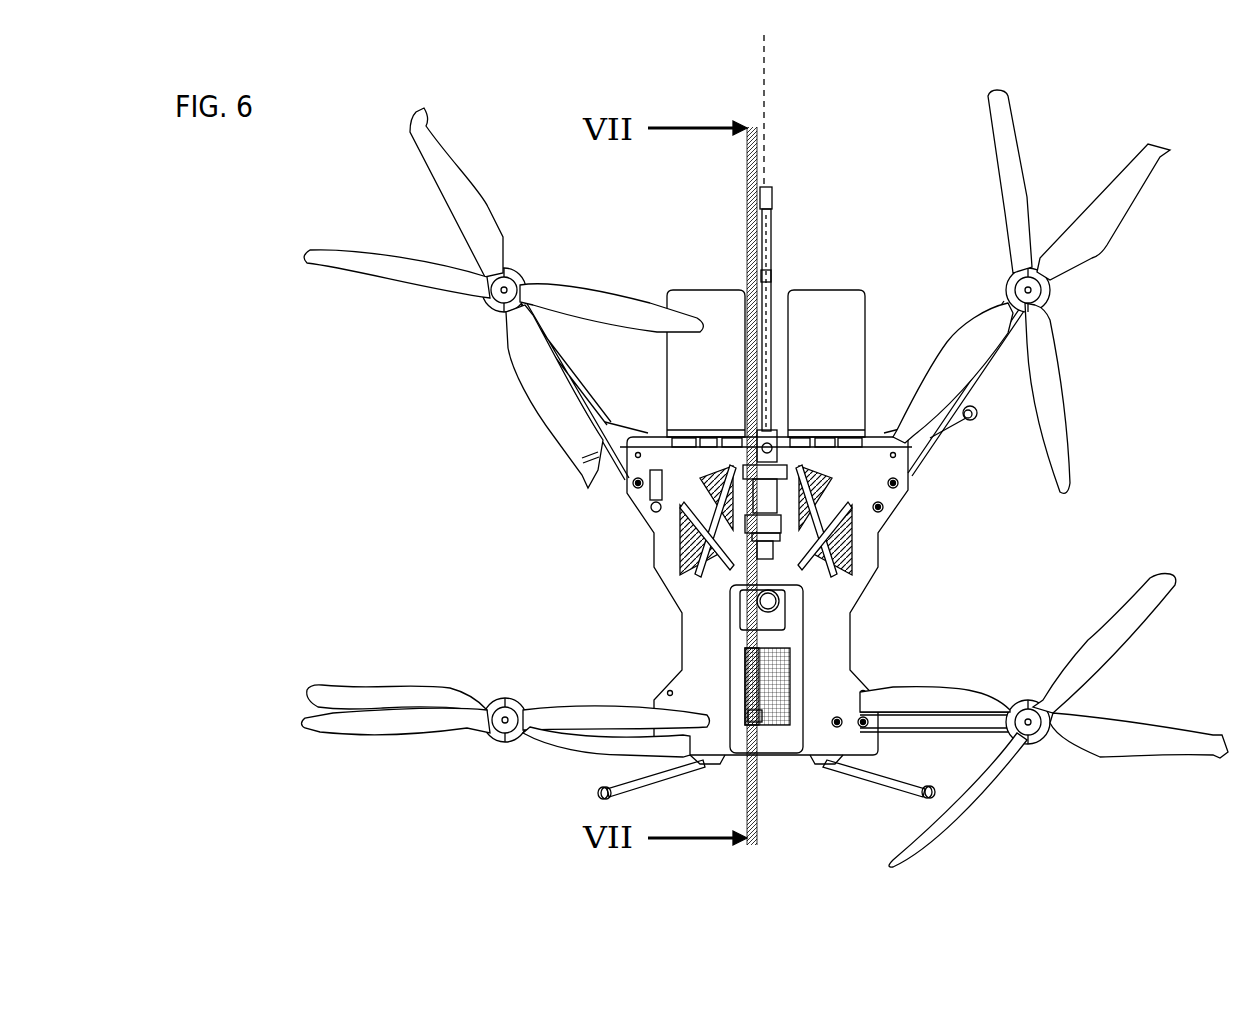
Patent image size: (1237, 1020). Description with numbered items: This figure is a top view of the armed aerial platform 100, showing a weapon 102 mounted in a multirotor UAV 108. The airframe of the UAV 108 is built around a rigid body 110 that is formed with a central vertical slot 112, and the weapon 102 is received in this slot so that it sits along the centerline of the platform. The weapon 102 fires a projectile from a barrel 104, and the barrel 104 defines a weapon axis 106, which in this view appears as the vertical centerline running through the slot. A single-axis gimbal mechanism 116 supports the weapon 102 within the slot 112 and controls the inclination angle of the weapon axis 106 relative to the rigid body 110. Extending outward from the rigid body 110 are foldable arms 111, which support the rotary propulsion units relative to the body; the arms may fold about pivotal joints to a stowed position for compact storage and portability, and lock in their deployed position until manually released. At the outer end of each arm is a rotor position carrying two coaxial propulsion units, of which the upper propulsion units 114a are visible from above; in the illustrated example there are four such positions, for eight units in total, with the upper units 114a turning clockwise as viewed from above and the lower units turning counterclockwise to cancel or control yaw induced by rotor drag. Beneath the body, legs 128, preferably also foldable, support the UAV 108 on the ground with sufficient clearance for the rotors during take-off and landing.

The armed aerial platform 100 is at (912, 92).
The weapon 102 is at (771, 428).
The barrel 104 is at (775, 198).
The weapon axis 106 is at (764, 95).
The UAV 108 is at (1073, 562).
The rigid body 110 is at (820, 637).
The foldable arms 111 is at (603, 432).
The central vertical slot 112 is at (780, 286).
The upper propulsion units 114a is at (498, 305).
The single-axis gimbal mechanism 116 is at (740, 478).
The legs 128 is at (652, 788).